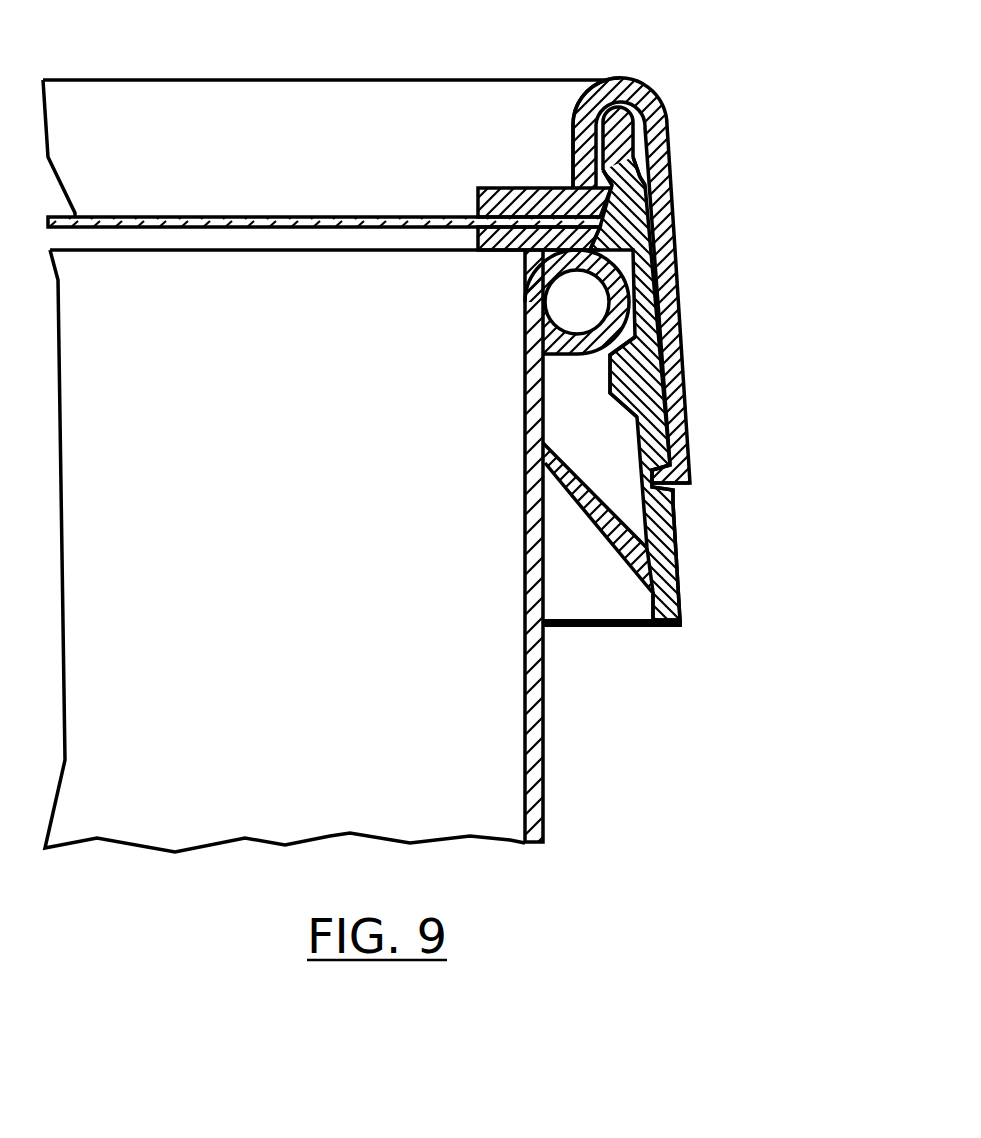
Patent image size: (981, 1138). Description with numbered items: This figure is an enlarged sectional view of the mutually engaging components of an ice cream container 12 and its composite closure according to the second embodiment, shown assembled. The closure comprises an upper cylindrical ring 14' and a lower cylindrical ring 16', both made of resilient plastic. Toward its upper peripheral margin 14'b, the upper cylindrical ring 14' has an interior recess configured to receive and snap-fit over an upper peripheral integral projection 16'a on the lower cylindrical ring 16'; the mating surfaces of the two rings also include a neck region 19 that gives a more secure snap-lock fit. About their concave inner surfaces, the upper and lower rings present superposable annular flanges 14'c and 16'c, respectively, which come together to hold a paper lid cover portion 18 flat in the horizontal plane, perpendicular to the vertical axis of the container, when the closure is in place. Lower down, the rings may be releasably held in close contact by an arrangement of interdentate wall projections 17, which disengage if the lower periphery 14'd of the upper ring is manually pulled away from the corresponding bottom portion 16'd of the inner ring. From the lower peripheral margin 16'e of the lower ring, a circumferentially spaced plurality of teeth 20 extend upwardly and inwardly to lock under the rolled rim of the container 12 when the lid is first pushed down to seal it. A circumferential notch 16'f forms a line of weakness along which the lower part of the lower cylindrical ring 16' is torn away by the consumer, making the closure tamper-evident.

The ice cream container 12 is at (291, 566).
The upper cylindrical ring 14' is at (403, 273).
The upper peripheral margin 14'b is at (561, 102).
The annular flange 14'c is at (511, 163).
The lower periphery of the upper ring 14'd is at (731, 450).
The lower cylindrical ring 16' is at (690, 388).
The upper peripheral integral projection 16'a is at (693, 138).
The annular flange 16'c is at (501, 280).
The bottom portion of the inner cylindrical ring 16'd is at (710, 377).
The lower peripheral margin 16'e is at (734, 566).
The circumferential notch 16'f is at (735, 513).
The interdentate wall projections 17 is at (622, 353).
The paper lid cover portion 18 is at (358, 228).
The neck region 19 is at (637, 188).
The teeth 20 is at (600, 530).